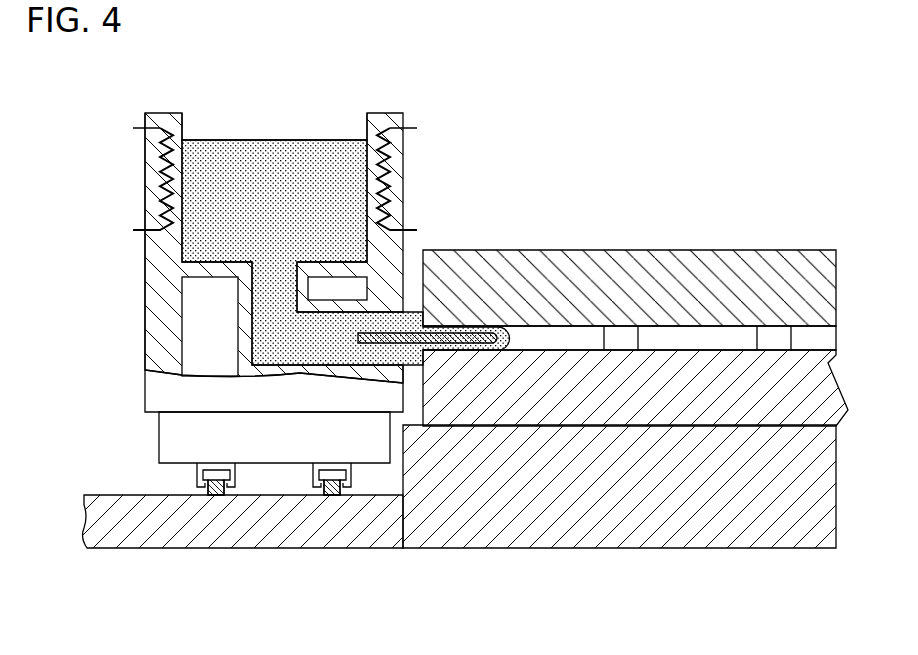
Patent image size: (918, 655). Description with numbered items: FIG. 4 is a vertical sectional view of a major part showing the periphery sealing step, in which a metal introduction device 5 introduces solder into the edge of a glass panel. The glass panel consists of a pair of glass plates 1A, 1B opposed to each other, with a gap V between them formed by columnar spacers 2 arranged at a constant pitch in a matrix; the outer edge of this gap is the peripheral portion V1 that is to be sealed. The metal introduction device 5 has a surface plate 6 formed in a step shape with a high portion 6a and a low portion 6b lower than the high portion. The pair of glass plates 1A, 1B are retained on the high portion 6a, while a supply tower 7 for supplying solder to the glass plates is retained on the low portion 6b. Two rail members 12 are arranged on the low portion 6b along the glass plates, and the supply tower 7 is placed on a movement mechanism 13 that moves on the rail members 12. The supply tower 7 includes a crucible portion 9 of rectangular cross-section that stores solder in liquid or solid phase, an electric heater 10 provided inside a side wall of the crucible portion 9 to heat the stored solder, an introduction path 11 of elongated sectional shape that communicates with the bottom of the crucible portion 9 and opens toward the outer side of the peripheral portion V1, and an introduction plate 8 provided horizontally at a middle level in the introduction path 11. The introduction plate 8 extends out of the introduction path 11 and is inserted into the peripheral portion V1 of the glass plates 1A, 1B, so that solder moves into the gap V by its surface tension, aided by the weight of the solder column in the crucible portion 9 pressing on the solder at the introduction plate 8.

The glass plate 1A is at (610, 250).
The glass plate 1B is at (708, 398).
The columnar spacer 2 is at (765, 330).
The metal introduction device 5 is at (284, 225).
The surface plate 6 is at (440, 525).
The high portion 6a is at (483, 520).
The low portion 6b is at (350, 532).
The supply tower 7 is at (237, 224).
The introduction plate 8 is at (456, 332).
The crucible portion 9 is at (256, 184).
The electric heater 10 is at (135, 128).
The introduction path 11 is at (240, 335).
The rail member 12 is at (333, 497).
The movement mechanism 13 is at (150, 477).
The gap V is at (812, 337).
The peripheral portion V1 is at (505, 226).